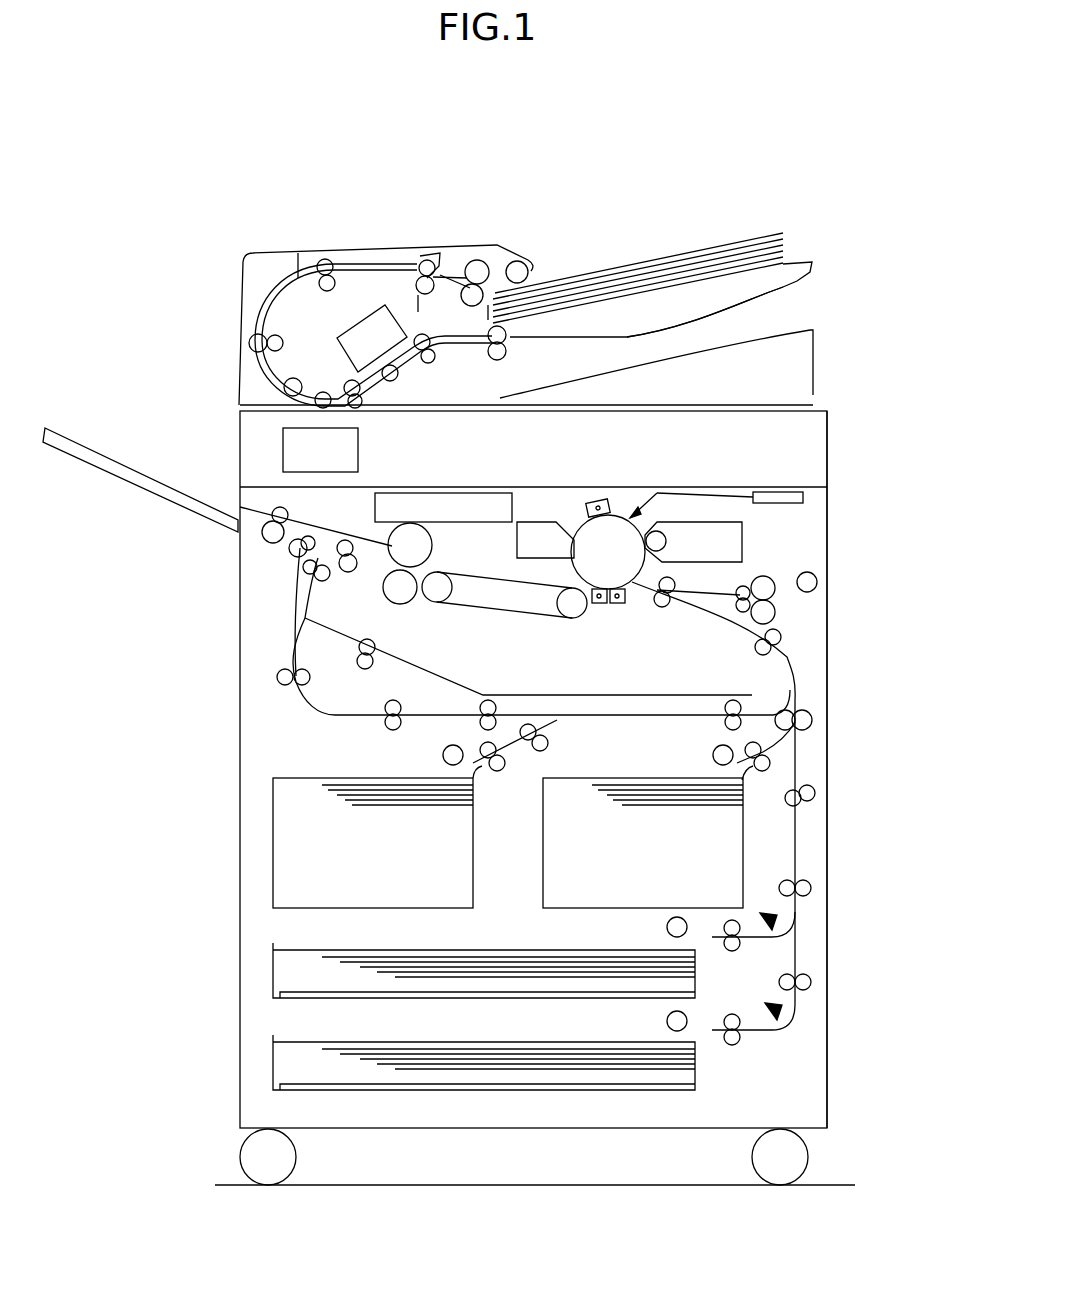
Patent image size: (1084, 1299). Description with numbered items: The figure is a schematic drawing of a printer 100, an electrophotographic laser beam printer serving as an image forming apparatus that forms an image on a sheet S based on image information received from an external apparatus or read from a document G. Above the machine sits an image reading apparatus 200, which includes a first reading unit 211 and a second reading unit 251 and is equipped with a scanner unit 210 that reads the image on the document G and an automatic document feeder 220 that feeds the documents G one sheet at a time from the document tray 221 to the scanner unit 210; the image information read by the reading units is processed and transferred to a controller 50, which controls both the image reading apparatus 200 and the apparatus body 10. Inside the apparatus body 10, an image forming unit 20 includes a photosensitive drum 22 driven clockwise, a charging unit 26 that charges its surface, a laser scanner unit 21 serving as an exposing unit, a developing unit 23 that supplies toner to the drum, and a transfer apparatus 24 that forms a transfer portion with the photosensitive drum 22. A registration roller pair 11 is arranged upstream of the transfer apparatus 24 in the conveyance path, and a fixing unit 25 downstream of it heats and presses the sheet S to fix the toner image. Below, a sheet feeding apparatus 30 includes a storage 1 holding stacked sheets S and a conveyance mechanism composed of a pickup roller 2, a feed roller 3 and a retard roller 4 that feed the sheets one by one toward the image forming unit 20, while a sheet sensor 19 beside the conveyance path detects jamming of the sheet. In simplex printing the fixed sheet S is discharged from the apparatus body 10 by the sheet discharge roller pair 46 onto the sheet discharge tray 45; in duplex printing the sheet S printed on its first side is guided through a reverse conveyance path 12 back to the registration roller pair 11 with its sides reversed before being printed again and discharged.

The printer 100 is at (708, 165).
The apparatus body 10 is at (827, 853).
The image reading apparatus 200 is at (895, 250).
The scanner unit 210 is at (842, 428).
The automatic document feeder 220 is at (840, 316).
The document tray 221 is at (683, 307).
The second reading unit 251 is at (363, 318).
The document G is at (560, 283).
The first reading unit 211 is at (283, 450).
The controller 50 is at (470, 492).
The image forming unit 20 is at (796, 520).
The laser scanner unit 21 is at (782, 492).
The photosensitive drum 22 is at (580, 522).
The charging unit 26 is at (598, 500).
The developing unit 23 is at (742, 548).
The transfer apparatus 24 is at (606, 606).
The fixing unit 25 is at (392, 543).
The registration roller pair 11 is at (657, 606).
The reverse conveyance path 12 is at (430, 713).
The sheet feeding apparatus 30 is at (815, 940).
The sheet sensor 19 is at (780, 923).
The feed roller 3 is at (738, 921).
The retard roller 4 is at (730, 951).
The pickup roller 2 is at (667, 927).
The storage 1 is at (273, 967).
The sheet S is at (387, 1042).
The sheet discharge tray 45 is at (120, 482).
The sheet discharge roller pair 46 is at (265, 541).